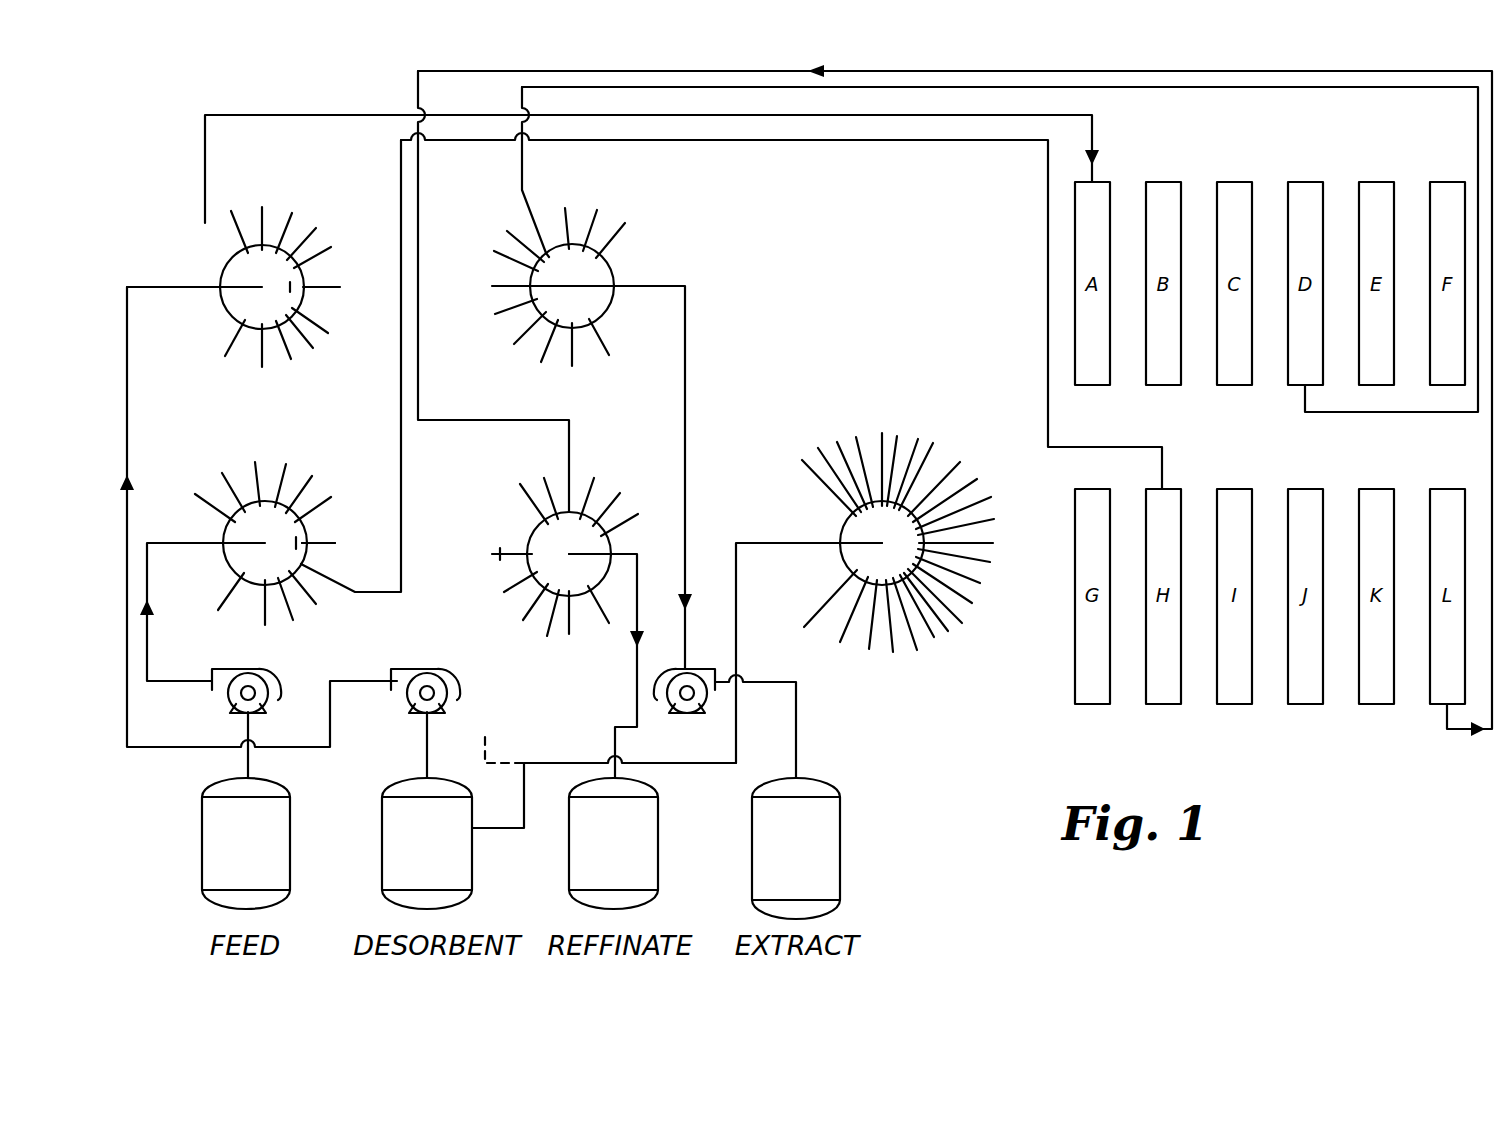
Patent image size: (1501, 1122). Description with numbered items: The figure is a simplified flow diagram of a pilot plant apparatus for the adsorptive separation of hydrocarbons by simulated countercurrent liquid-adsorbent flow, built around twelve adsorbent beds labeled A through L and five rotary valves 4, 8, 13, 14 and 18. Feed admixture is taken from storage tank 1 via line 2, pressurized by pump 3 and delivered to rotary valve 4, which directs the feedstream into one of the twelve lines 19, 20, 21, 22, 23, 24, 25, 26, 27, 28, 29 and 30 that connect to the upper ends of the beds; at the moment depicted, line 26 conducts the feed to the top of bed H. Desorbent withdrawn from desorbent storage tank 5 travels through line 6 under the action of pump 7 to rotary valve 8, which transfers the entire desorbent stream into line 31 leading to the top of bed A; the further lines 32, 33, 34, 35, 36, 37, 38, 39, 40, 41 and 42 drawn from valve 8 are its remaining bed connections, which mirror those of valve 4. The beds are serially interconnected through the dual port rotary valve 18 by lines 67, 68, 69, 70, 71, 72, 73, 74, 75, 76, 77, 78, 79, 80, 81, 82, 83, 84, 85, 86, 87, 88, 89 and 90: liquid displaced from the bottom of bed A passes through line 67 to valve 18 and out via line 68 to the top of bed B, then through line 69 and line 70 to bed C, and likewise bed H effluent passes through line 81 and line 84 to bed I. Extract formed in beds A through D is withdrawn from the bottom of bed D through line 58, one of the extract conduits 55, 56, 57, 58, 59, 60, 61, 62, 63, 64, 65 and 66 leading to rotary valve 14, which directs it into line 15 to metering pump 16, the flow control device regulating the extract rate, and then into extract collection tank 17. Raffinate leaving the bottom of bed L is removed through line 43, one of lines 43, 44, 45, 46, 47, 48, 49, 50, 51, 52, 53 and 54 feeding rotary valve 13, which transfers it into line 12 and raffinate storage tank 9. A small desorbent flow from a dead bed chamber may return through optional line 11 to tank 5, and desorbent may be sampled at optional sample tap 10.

The storage tank 1 is at (282, 812).
The line 2 is at (147, 642).
The pump 3 is at (274, 698).
The rotary valve 4 is at (220, 537).
The desorbent storage tank 5 is at (472, 815).
The line 6 is at (127, 446).
The pump 7 is at (420, 676).
The rotary valve 8 is at (216, 306).
The raffinate storage tank 9 is at (658, 840).
The optional sample tap 10 is at (485, 736).
The optional line 11 is at (568, 762).
The line 12 is at (634, 697).
The rotary valve 13 is at (610, 545).
The rotary valve 14 is at (614, 273).
The line 15 is at (685, 366).
The metering pump 16 is at (660, 680).
The extract collection tank 17 is at (840, 840).
The rotary valve 18 is at (840, 535).
The line 19 is at (198, 498).
The line 20 is at (228, 482).
The line 21 is at (256, 470).
The line 22 is at (286, 472).
The line 23 is at (304, 488).
The line 24 is at (326, 507).
The line 25 is at (336, 540).
The line 26 is at (338, 567).
The line 27 is at (320, 602).
The line 28 is at (284, 610).
The line 29 is at (266, 616).
The line 30 is at (224, 604).
The line 31 is at (205, 190).
The valve port line 32 is at (231, 211).
The valve port line 33 is at (262, 208).
The valve port line 34 is at (292, 212).
The valve port line 35 is at (316, 228).
The valve port line 36 is at (331, 247).
The valve port line 37 is at (340, 287).
The valve port line 38 is at (328, 333).
The valve port line 39 is at (313, 348).
The valve port line 40 is at (291, 359).
The valve port line 41 is at (262, 367).
The valve port line 42 is at (225, 356).
The line 43 is at (1233, 92).
The line 44 is at (519, 484).
The line 45 is at (546, 492).
The line 46 is at (580, 484).
The line 47 is at (606, 492).
The line 48 is at (632, 512).
The line 49 is at (494, 554).
The line 50 is at (504, 586).
The line 51 is at (522, 616).
The line 52 is at (542, 614).
The line 53 is at (568, 630).
The line 54 is at (591, 614).
The valve port line 55 is at (624, 240).
The valve port line 56 is at (586, 223).
The valve port line 57 is at (563, 224).
The line 58 is at (528, 212).
The valve port line 59 is at (508, 234).
The valve port line 60 is at (500, 257).
The valve port line 61 is at (497, 286).
The valve port line 62 is at (504, 312).
The valve port line 63 is at (514, 338).
The valve port line 64 is at (536, 362).
The valve port line 65 is at (572, 364).
The valve port line 66 is at (610, 361).
The line 67 is at (804, 460).
The line 68 is at (818, 450).
The line 69 is at (836, 444).
The line 70 is at (856, 436).
The valve port line 71 is at (884, 432).
The valve port line 72 is at (900, 436).
The valve port line 73 is at (920, 442).
The valve port line 74 is at (936, 447).
The valve port line 75 is at (962, 464).
The valve port line 76 is at (978, 480).
The valve port line 77 is at (990, 498).
The valve port line 78 is at (994, 520).
The valve port line 79 is at (994, 544).
The valve port line 80 is at (990, 562).
The line 81 is at (980, 583).
The valve port line 82 is at (972, 604).
The valve port line 83 is at (962, 622).
The line 84 is at (948, 632).
The valve port line 85 is at (934, 638).
The valve port line 86 is at (918, 650).
The valve port line 87 is at (892, 652).
The valve port line 88 is at (868, 650).
The valve port line 89 is at (840, 642).
The valve port line 90 is at (812, 619).